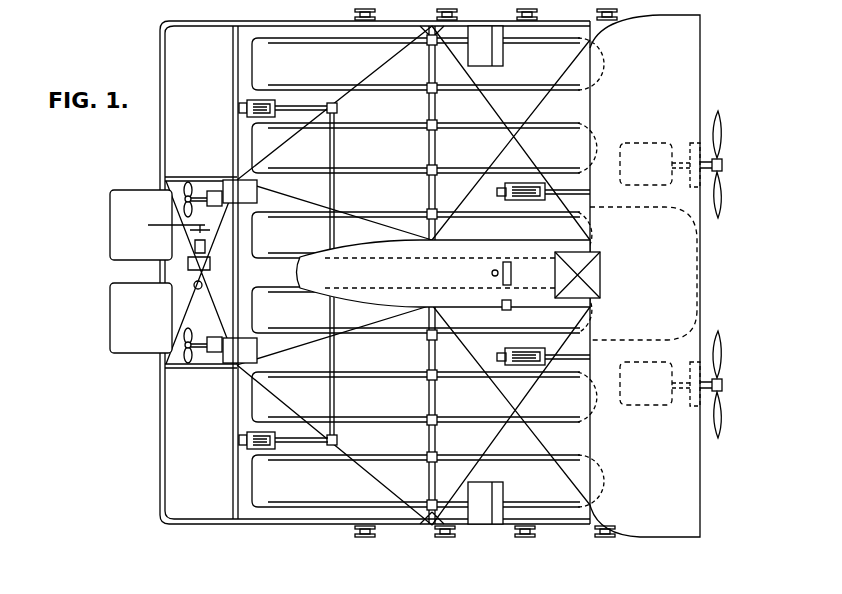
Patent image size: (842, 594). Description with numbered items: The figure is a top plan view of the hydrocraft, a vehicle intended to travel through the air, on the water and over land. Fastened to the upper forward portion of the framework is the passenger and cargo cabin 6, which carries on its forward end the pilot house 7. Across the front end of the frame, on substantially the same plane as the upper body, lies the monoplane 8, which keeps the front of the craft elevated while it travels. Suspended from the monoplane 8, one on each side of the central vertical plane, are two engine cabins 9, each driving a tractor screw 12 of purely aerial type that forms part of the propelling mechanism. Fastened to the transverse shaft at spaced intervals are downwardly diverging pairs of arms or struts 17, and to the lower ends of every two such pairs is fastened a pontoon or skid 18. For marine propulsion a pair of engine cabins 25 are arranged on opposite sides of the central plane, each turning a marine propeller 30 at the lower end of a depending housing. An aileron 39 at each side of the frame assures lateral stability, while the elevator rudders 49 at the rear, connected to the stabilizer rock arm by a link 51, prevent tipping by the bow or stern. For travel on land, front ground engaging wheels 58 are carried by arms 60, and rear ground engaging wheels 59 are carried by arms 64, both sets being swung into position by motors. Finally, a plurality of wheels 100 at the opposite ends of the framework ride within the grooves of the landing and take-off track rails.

The passenger and cargo cabin 6 is at (444, 275).
The pilot house 7 is at (603, 276).
The monoplane 8 is at (645, 276).
The engine cabin 9 is at (636, 143).
The tractor screw 12 is at (719, 141).
The arms or struts 17 is at (404, 129).
The pontoon or skid 18 is at (428, 272).
The engine cabin 25 is at (257, 345).
The marine propeller 30 is at (190, 178).
The aileron 39 is at (490, 478).
The elevator rudder 49 is at (141, 271).
The link 51 is at (165, 238).
The front ground engaging wheel 58 is at (515, 201).
The rear ground engaging wheel 59 is at (238, 108).
The arm 60 is at (592, 188).
The arm 64 is at (302, 445).
The wheel 100 is at (450, 538).